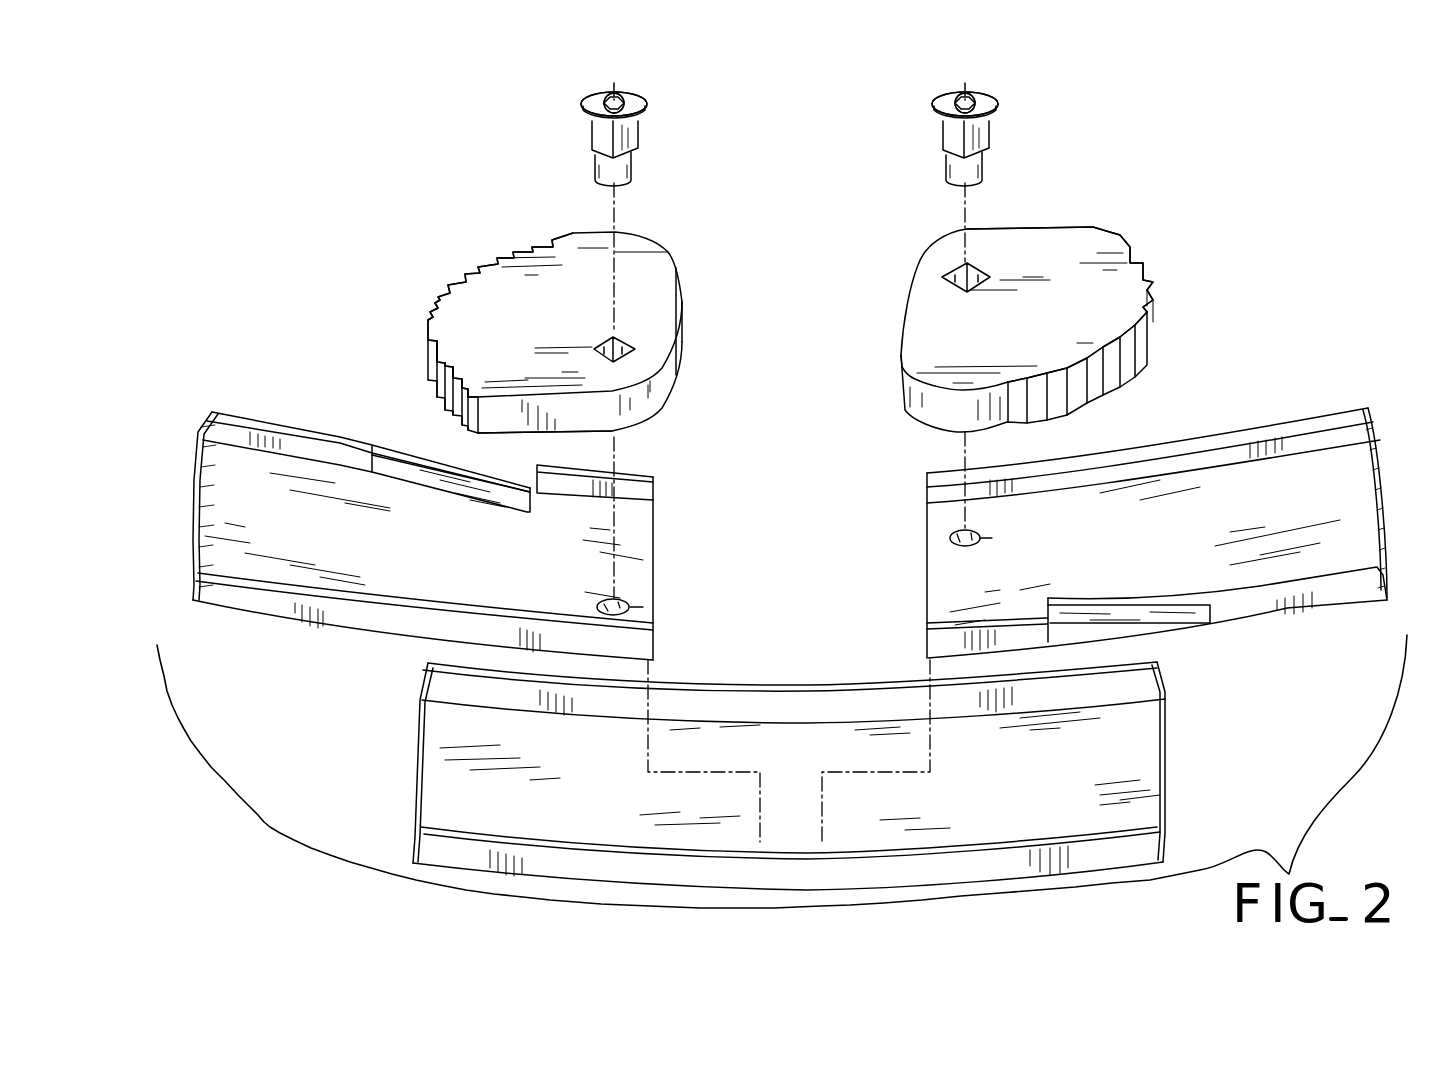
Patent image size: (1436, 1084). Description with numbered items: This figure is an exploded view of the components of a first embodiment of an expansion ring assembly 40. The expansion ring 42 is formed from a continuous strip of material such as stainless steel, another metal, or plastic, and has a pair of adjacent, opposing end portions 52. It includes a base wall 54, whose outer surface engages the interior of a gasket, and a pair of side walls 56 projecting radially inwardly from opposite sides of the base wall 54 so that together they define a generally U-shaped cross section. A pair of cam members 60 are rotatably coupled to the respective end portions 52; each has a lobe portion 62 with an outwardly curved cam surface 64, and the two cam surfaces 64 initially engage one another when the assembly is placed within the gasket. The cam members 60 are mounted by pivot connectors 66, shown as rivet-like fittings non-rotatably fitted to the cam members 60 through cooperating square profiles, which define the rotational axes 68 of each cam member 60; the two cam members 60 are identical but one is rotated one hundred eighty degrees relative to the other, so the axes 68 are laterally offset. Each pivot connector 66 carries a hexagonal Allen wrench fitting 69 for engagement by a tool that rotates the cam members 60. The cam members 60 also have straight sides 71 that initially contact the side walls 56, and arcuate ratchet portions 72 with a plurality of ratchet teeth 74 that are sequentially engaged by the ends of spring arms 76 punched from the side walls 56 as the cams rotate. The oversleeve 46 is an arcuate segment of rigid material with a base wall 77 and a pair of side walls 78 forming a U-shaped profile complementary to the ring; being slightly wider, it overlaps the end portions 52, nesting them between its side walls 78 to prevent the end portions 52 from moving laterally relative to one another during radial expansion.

The expansion ring assembly 40 is at (1248, 186).
The expansion ring 42 is at (790, 497).
The base wall 54 is at (220, 453).
The oversleeve 46 is at (791, 750).
The end portions 52 is at (790, 512).
The side walls 56 is at (297, 445).
The cam members 60 is at (795, 305).
The lobe portion 62 is at (658, 278).
The cam surface 64 is at (680, 338).
The pivot connectors 66 is at (650, 135).
The rotational axes 68 is at (588, 94).
The hexagonal Allen wrench fittings 69 is at (630, 101).
The straight sides 71 is at (580, 410).
The arcuate ratchet portions 72 is at (450, 282).
The ratchet teeth 74 is at (428, 321).
The spring arms 76 is at (480, 488).
The base wall 77 is at (443, 780).
The side walls 78 is at (522, 700).